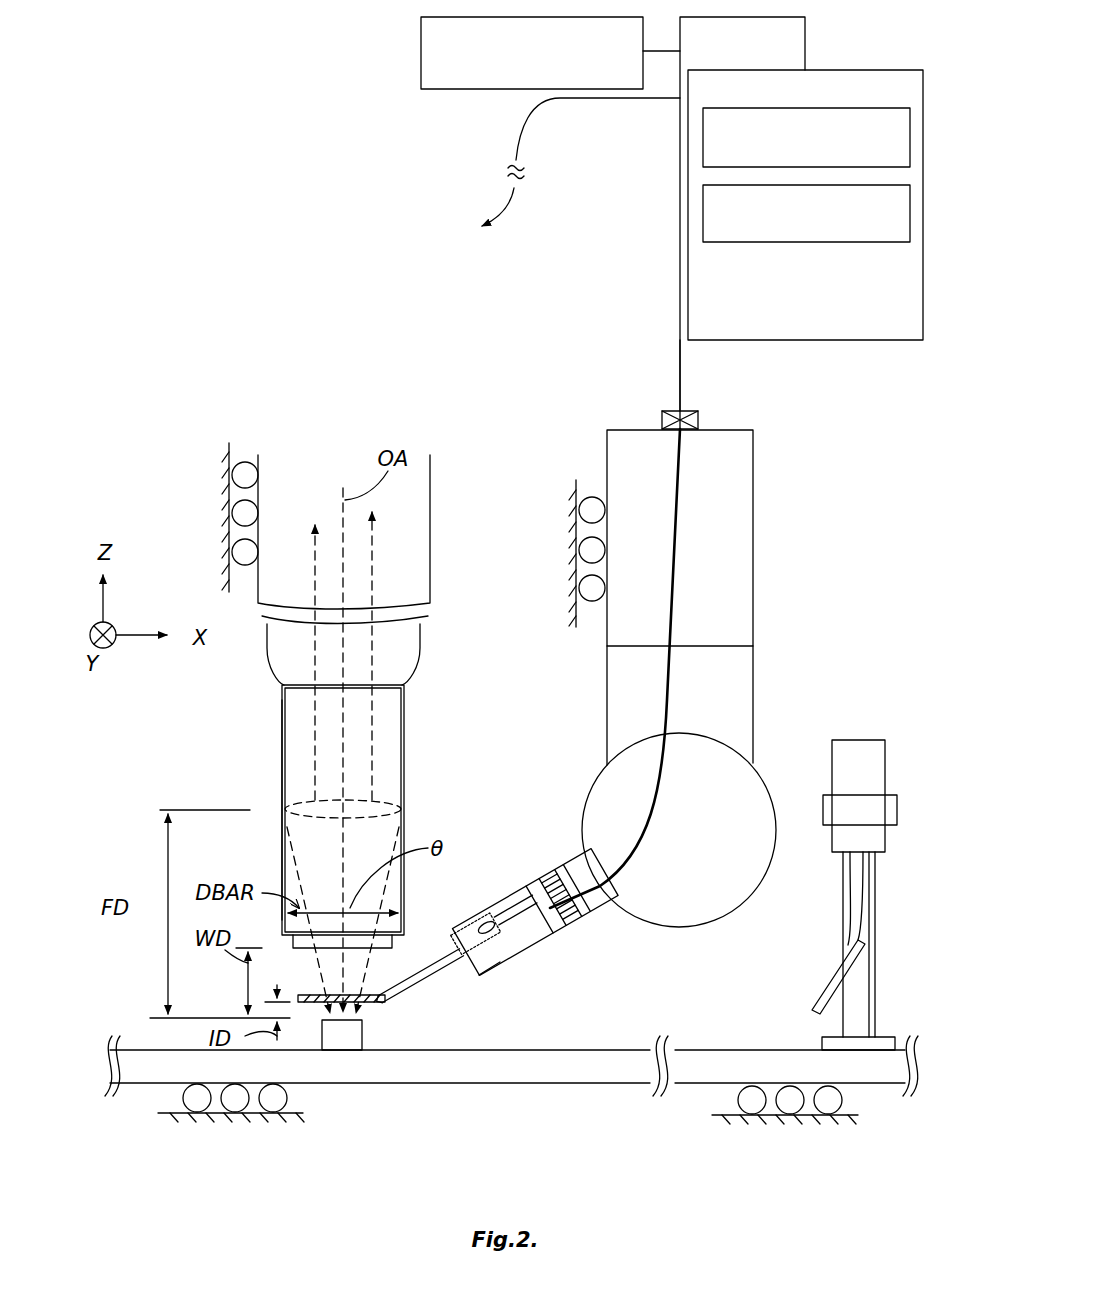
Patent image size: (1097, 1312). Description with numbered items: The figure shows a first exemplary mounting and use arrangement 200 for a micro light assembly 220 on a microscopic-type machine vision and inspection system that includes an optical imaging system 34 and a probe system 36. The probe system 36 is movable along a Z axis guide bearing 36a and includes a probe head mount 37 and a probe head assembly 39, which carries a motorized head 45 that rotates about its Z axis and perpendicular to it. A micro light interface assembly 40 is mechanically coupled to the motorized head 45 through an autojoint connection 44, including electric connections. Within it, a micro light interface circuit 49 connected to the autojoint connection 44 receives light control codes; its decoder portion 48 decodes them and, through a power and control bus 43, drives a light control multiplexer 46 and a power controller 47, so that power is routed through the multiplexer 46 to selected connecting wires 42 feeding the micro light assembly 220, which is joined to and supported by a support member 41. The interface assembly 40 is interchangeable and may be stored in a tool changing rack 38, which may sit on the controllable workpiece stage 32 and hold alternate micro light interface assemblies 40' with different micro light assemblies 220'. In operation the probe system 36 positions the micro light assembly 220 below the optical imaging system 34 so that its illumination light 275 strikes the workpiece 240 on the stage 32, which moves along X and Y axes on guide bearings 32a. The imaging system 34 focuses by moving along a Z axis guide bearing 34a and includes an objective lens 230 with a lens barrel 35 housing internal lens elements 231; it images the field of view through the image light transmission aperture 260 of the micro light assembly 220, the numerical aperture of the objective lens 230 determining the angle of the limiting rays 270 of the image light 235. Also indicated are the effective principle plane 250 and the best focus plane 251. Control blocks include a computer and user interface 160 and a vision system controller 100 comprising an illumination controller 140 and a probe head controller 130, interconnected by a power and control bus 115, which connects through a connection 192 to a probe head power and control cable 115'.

The computer and user interface 160 is at (421, 50).
The vision system controller 100 is at (866, 342).
The probe head controller 130 is at (703, 133).
The illumination controller 140 is at (703, 207).
The power and control bus 115 is at (633, 372).
The connection 192 is at (662, 419).
The mounting and use arrangement 200 is at (170, 236).
The optical imaging system 34 is at (435, 534).
The Z axis guide bearing 34a is at (253, 460).
The image light 235 is at (315, 560).
The objective lens 230 is at (410, 722).
The lens barrel 35 is at (282, 750).
The internal lens elements 231 is at (410, 812).
The limiting rays 270 is at (394, 850).
The effective principle plane 250 is at (163, 810).
The image light transmission aperture 260 is at (298, 995).
The best focus plane 251 is at (150, 1018).
The workpiece 240 is at (335, 1050).
The illumination light 275 is at (322, 1004).
The workpiece stage 32 is at (448, 1085).
The guide bearings 32a is at (163, 1095).
The probe system 36 is at (852, 546).
The probe head mount 37 is at (755, 507).
The probe head assembly 39 is at (758, 684).
The Z axis guide bearing 36a is at (593, 494).
The probe head power and control cable 115' is at (699, 668).
The motorized head 45 is at (775, 810).
The micro light interface assembly 40 is at (491, 938).
The power controller 47 is at (485, 966).
The autojoint connection 44 is at (560, 898).
The decoder portion 48 is at (576, 888).
The micro light interface circuit 49 is at (539, 909).
The power and control bus 43 is at (515, 910).
The light control multiplexer 46 is at (486, 927).
The connecting wires 42 is at (476, 934).
The support member 41 is at (420, 976).
The micro light assembly 220 is at (378, 1000).
The tool changing rack 38 is at (898, 809).
The alternate micro light interface assembly 40' is at (874, 805).
The different micro light assembly 220' is at (790, 977).